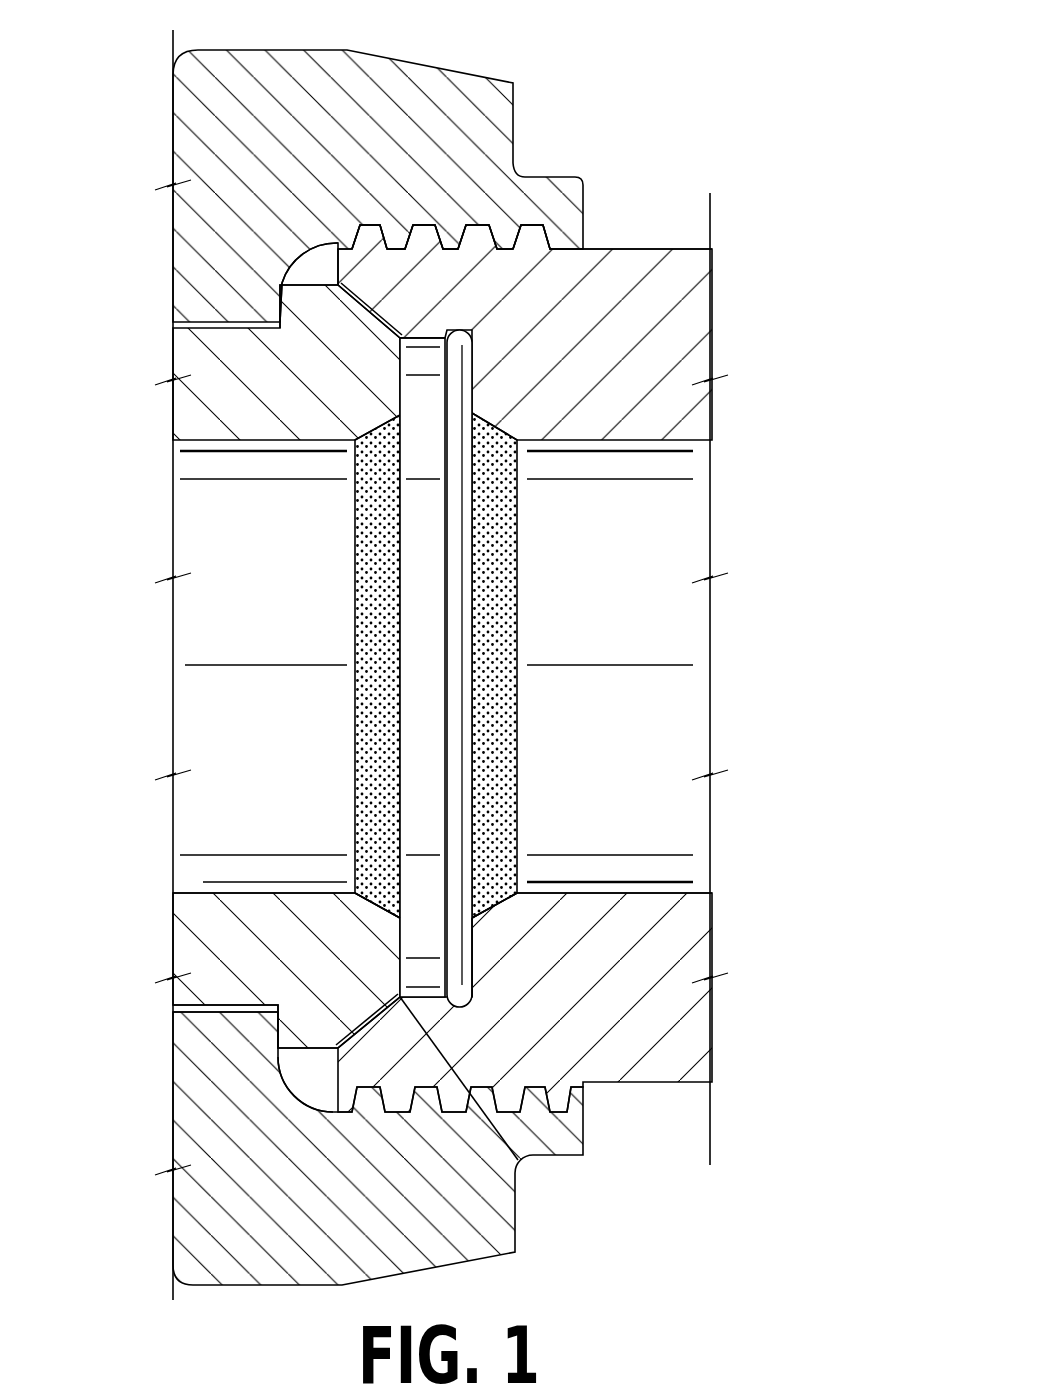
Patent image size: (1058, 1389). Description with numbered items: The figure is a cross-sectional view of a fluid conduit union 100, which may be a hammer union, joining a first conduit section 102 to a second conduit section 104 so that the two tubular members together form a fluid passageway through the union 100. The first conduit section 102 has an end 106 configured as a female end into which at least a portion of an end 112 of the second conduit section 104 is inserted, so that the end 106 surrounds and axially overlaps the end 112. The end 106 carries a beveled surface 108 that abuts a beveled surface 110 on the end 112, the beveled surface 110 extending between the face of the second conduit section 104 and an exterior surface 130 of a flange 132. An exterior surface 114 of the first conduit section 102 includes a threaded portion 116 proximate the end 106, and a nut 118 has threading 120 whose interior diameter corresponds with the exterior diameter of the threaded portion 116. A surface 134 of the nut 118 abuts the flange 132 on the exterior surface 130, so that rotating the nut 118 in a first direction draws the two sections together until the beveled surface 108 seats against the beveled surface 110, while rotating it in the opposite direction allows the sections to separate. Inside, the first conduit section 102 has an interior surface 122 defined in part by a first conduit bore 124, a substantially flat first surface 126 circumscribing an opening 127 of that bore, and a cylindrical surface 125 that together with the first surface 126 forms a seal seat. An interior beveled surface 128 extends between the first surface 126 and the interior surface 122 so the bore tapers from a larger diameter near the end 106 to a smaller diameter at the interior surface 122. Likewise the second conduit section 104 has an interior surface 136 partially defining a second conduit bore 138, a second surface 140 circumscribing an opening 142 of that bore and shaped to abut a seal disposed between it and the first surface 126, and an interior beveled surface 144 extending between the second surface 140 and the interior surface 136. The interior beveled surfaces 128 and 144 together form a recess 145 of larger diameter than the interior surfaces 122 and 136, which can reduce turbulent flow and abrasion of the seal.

The fluid conduit union 100 is at (752, 32).
The first conduit section 102 is at (685, 327).
The second conduit section 104 is at (178, 412).
The end 106 is at (372, 222).
The beveled surface 108 is at (516, 1165).
The beveled surface 110 is at (365, 1024).
The end 112 is at (337, 1067).
The exterior surface 114 is at (672, 252).
The threaded portion 116 is at (533, 235).
The nut 118 is at (198, 87).
The threading 120 is at (447, 223).
The interior surface 122 is at (625, 586).
The first conduit bore 124 is at (718, 521).
The cylindrical surface 125 is at (415, 336).
The first surface 126 is at (472, 372).
The opening 127 is at (477, 706).
The interior beveled surface 128 is at (517, 897).
The exterior surface 130 is at (183, 322).
The flange 132 is at (277, 313).
The surface 134 is at (278, 280).
The interior surface 136 is at (267, 552).
The second conduit bore 138 is at (157, 650).
The second surface 140 is at (398, 387).
The opening 142 is at (399, 647).
The interior beveled surface 144 is at (355, 895).
The recess 145 is at (476, 920).